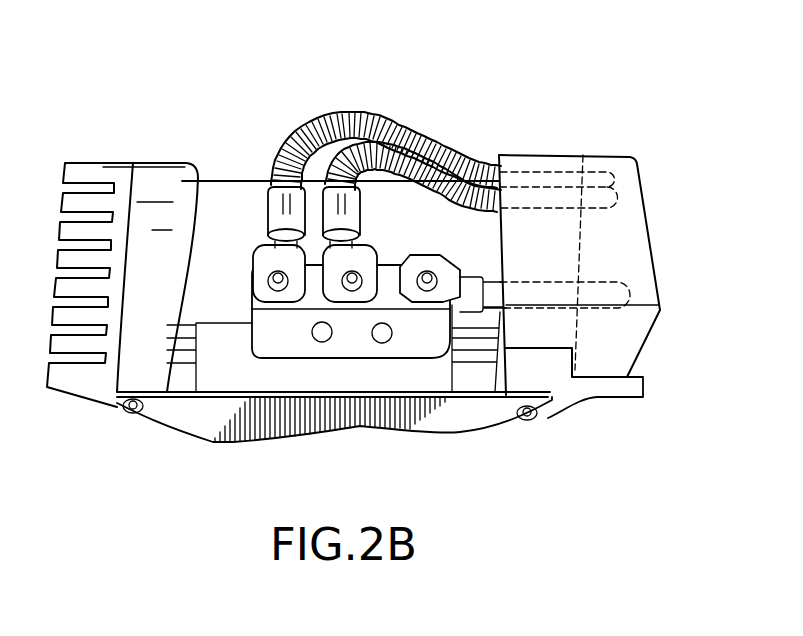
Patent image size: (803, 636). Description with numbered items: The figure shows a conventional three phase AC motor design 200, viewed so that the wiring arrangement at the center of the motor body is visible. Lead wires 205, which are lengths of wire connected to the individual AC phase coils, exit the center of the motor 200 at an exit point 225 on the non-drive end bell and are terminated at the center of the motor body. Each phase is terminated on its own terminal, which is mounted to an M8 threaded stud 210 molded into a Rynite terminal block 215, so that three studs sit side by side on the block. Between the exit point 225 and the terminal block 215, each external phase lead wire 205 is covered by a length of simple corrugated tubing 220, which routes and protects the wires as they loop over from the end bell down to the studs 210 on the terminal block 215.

The three phase AC motor design 200 is at (253, 180).
The lead wires 205 is at (437, 130).
The M8 threaded stud 210 is at (337, 293).
The Rynite terminal block 215 is at (395, 313).
The corrugated tubing 220 is at (257, 205).
The exit point 225 is at (583, 240).